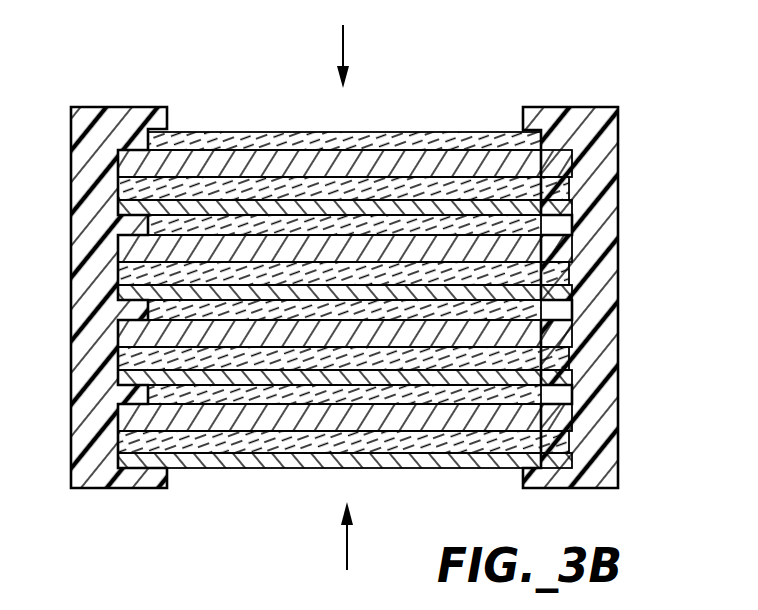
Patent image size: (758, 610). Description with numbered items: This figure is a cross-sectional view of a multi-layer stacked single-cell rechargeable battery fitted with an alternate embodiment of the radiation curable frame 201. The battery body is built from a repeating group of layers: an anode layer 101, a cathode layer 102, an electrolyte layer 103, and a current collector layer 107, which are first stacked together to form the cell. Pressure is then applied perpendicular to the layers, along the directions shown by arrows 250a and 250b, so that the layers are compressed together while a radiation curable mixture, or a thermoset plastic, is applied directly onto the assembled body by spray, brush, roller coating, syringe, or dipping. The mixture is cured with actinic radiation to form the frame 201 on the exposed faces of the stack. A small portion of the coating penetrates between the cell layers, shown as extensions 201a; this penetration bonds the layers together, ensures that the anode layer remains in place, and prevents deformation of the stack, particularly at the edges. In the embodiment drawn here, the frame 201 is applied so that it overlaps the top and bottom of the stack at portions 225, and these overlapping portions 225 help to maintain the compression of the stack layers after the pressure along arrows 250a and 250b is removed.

The overlapping portions of the frame 225 is at (128, 100).
The radiation curable frame 201 is at (612, 133).
The extensions 201a is at (572, 310).
The anode layer 101 is at (310, 138).
The cathode layer 102 is at (218, 190).
The electrolyte layer 103 is at (390, 423).
The current collector layer 107 is at (288, 462).
The arrow 250a is at (343, 48).
The arrow 250b is at (347, 545).